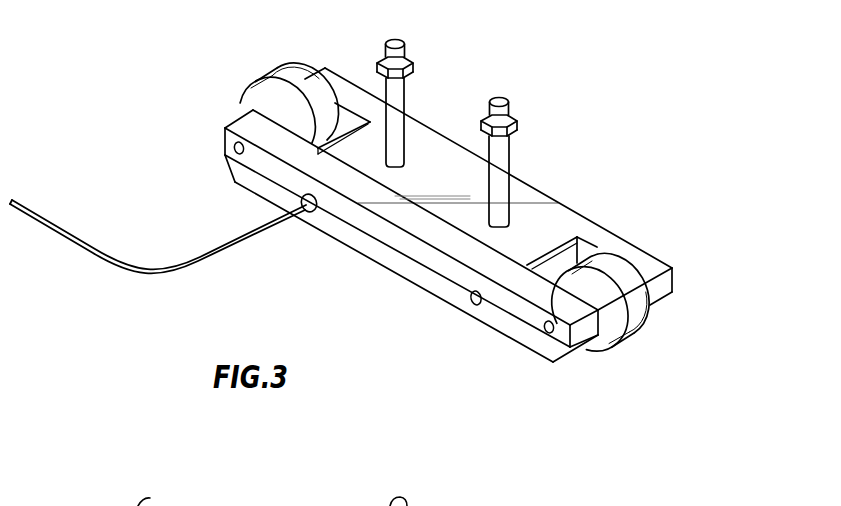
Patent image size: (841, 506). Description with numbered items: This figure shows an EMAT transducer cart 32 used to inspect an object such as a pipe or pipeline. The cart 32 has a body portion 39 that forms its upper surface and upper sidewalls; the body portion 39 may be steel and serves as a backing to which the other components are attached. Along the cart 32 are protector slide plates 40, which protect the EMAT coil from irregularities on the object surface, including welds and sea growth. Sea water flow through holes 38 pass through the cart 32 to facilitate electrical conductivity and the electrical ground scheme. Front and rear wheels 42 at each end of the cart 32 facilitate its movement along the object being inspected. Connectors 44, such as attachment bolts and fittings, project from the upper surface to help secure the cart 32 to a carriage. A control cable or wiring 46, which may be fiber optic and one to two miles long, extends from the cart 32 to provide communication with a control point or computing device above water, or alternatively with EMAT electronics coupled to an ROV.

The EMAT transducer cart 32 is at (572, 149).
The sea water flow through holes 38 is at (470, 303).
The body portion 39 is at (560, 224).
The protector slide plates 40 is at (392, 272).
The front and rear wheels 42 is at (246, 84).
The connectors 44 is at (400, 46).
The control cable or wiring 46 is at (138, 276).